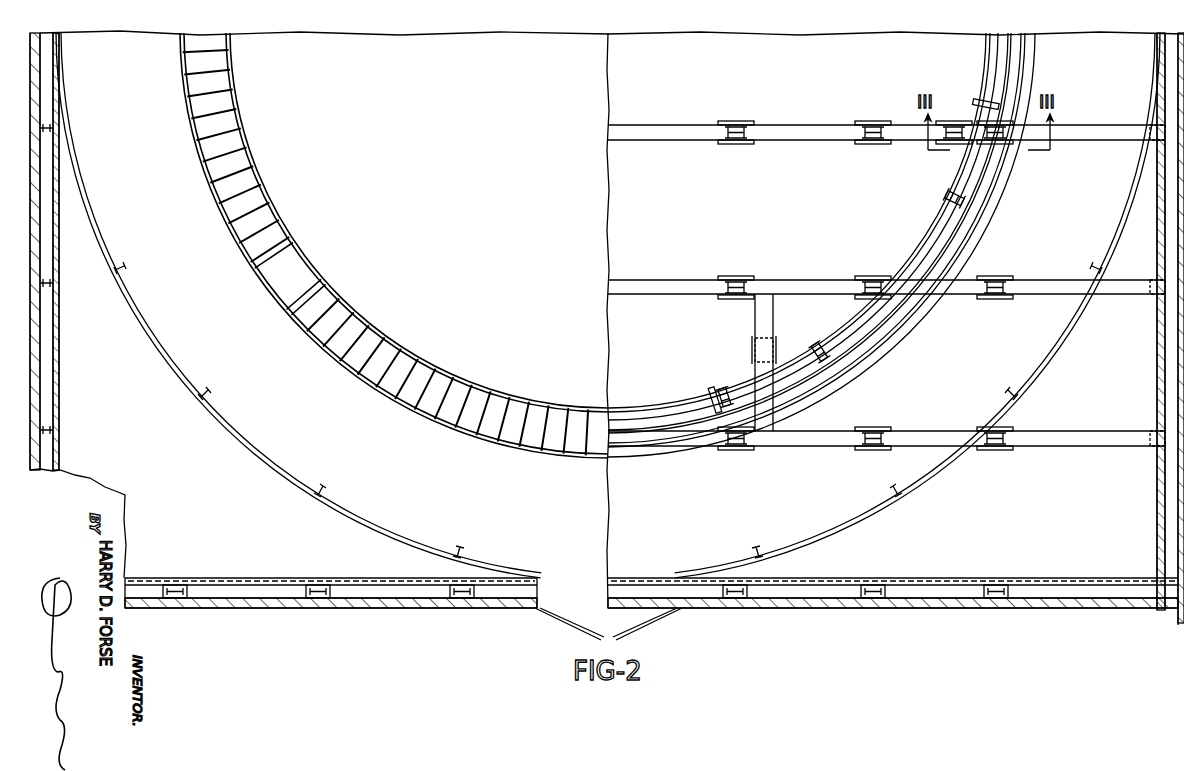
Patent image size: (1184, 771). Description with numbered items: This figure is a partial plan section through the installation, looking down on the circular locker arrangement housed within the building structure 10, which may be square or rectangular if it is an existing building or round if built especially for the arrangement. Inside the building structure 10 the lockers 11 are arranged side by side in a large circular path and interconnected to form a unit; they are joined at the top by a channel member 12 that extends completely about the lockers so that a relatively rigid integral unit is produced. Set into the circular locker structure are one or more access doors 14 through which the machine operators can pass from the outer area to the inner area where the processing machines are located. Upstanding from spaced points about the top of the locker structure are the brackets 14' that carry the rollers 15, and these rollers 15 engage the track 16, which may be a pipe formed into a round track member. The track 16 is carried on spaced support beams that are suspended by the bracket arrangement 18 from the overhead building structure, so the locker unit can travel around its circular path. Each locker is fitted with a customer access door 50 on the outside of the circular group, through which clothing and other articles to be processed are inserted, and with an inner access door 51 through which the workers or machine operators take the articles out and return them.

The building structure 10 is at (1110, 40).
The lockers 11 is at (394, 264).
The channel member 12 is at (892, 340).
The access doors 14 is at (278, 289).
The brackets 14' is at (838, 298).
The rollers 15 is at (712, 398).
The track 16 is at (838, 347).
The bracket arrangement 18 is at (878, 281).
The customer access doors 50 is at (334, 364).
The access door 51 is at (543, 389).